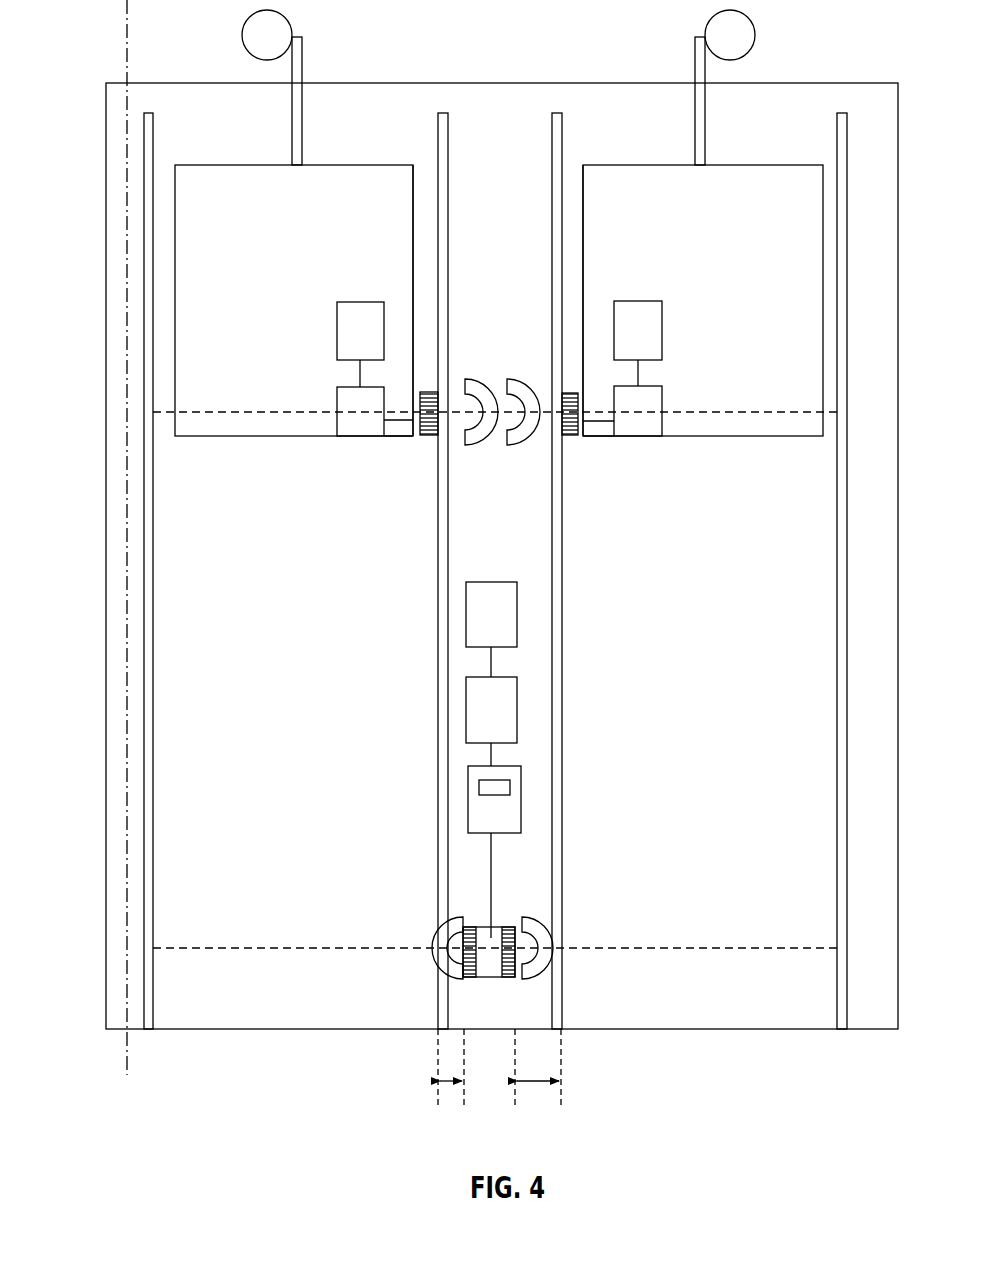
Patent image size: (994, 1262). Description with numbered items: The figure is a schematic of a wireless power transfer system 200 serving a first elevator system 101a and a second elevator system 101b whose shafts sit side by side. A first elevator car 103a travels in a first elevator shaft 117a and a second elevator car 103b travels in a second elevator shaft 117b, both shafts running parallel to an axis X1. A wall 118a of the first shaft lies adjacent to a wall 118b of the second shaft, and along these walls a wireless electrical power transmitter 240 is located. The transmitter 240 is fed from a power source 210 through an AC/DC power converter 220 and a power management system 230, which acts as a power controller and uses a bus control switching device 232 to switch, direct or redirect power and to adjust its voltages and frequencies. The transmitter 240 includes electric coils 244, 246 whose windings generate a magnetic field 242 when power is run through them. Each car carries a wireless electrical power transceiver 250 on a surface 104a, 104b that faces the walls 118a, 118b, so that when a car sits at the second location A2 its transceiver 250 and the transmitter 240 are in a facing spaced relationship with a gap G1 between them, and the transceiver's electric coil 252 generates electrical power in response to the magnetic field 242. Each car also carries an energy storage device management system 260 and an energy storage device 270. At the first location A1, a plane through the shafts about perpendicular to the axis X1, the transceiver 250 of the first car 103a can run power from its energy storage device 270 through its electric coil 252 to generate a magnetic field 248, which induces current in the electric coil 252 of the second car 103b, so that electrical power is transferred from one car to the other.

The wireless power transfer system 200 is at (806, 104).
The first elevator system 101a is at (80, 95).
The second elevator system 101b is at (497, 93).
The first elevator car 103a is at (292, 226).
The second elevator car 103b is at (719, 254).
The surface of the first elevator car 104a is at (413, 268).
The surface of the second elevator car 104b is at (583, 228).
The first elevator shaft 117a is at (295, 583).
The second elevator shaft 117b is at (657, 596).
The wall of the first elevator shaft 118a is at (437, 883).
The wall of the second elevator shaft 118b is at (563, 116).
The power source 210 is at (466, 622).
The AC/DC power converter 220 is at (466, 708).
The power management system 230 is at (482, 810).
The bus control switching device 232 is at (487, 788).
The wireless electrical power transmitter 240 is at (476, 977).
The magnetic field 242 is at (435, 973).
The electric coil 244 is at (467, 927).
The electric coil 246 is at (510, 927).
The magnetic field 248 is at (527, 442).
The wireless electrical power transceiver 250 is at (425, 440).
The electric coil 252 is at (430, 393).
The energy storage device management system 260 is at (352, 428).
The energy storage device 270 is at (350, 325).
The axis X1 is at (127, 1000).
The first location A1 is at (300, 948).
The second location A2 is at (275, 413).
The gap G1 is at (438, 1081).